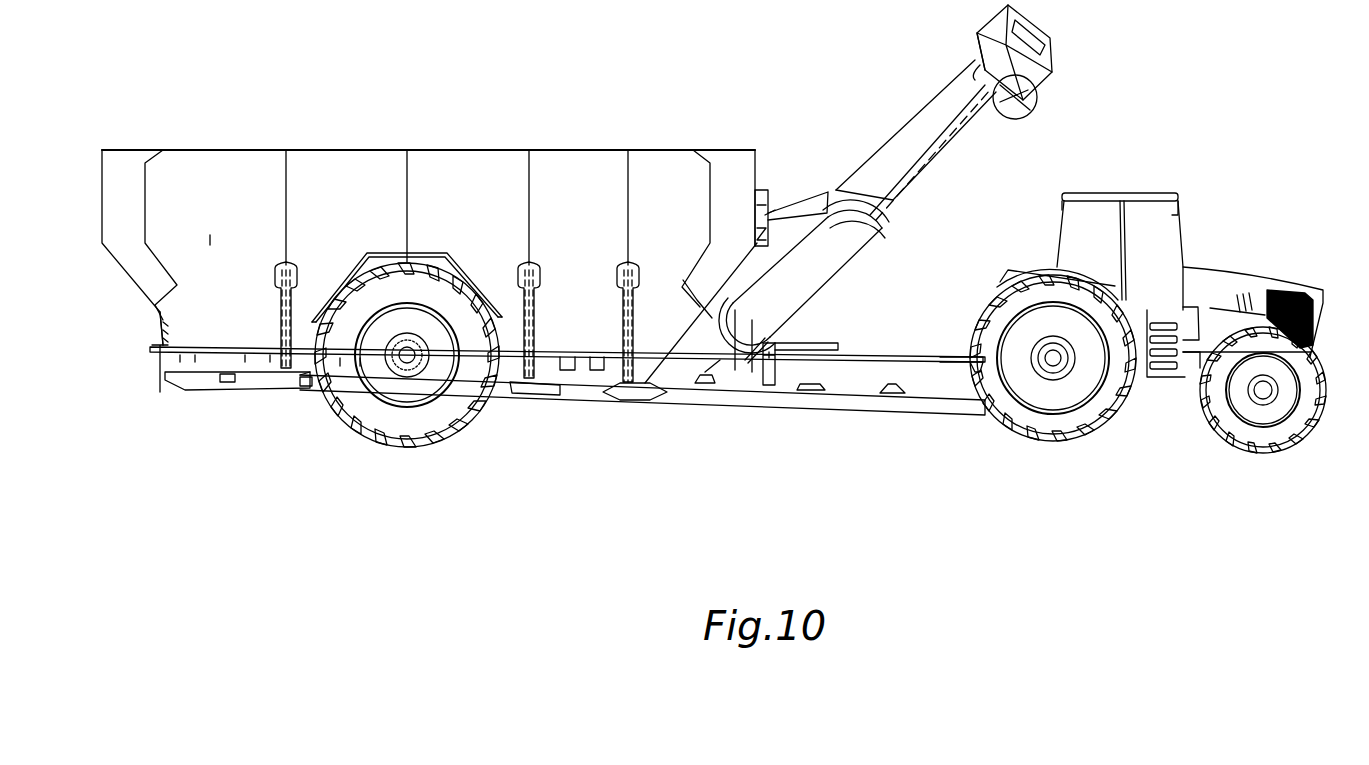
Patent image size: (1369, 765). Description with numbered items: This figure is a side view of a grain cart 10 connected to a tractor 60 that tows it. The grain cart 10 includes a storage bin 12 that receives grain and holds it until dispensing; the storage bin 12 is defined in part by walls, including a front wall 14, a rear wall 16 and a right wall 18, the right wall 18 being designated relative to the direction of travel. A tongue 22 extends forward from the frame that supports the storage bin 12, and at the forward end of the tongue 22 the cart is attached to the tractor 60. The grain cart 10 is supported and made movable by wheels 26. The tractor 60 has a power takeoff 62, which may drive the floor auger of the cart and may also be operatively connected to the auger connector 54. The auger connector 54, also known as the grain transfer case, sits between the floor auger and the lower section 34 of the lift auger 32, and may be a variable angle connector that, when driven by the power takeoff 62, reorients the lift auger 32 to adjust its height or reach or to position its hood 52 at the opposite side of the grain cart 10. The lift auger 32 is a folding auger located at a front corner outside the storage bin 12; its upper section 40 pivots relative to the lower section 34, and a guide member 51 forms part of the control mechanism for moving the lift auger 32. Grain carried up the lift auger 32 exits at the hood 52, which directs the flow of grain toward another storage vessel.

The grain cart 10 is at (220, 78).
The storage bin 12 is at (308, 150).
The front wall 14 is at (758, 162).
The rear wall 16 is at (102, 190).
The right wall 18 is at (432, 165).
The tongue 22 is at (946, 409).
The wheels 26 is at (346, 412).
The lift auger 32 is at (900, 128).
The lower section 34 is at (836, 256).
The upper section 40 is at (936, 148).
The guide member 51 is at (757, 198).
The hood 52 is at (1055, 50).
The auger connector 54 is at (742, 345).
The tractor 60 is at (1160, 193).
The power takeoff 62 is at (963, 357).